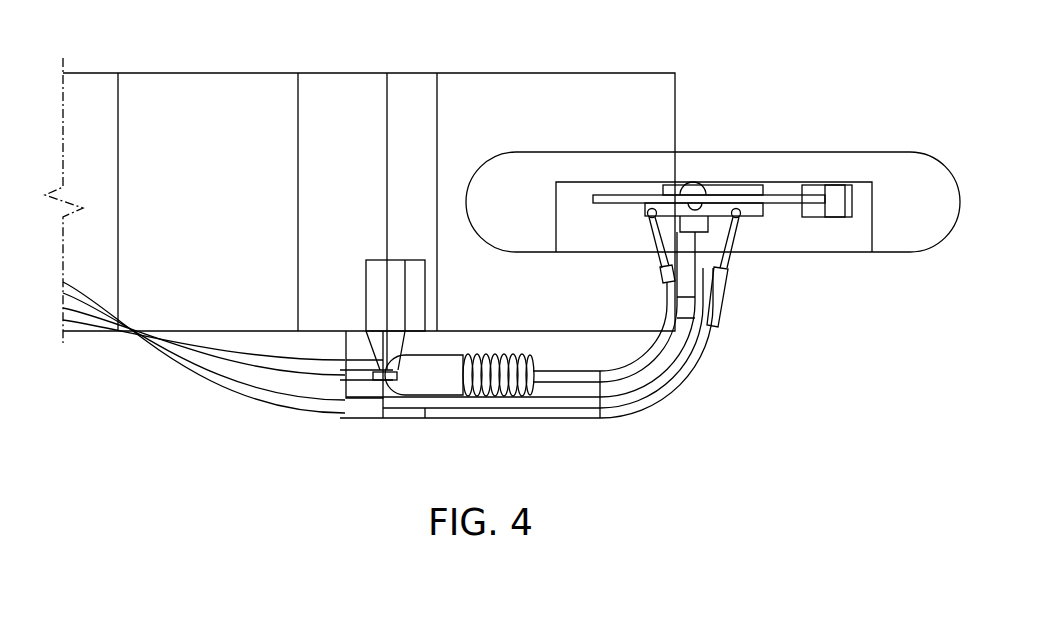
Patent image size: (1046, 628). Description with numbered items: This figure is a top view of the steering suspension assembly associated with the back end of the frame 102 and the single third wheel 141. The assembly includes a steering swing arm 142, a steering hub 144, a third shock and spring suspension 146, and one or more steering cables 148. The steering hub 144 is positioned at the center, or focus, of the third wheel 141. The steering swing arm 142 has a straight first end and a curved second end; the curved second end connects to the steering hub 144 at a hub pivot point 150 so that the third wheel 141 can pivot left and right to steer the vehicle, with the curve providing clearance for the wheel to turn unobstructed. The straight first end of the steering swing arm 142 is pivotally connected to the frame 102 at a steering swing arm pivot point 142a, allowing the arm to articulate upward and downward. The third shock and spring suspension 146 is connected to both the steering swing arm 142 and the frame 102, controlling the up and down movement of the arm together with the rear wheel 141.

The frame 102 is at (246, 84).
The third wheel 141 is at (873, 152).
The steering swing arm 142 is at (633, 383).
The steering swing arm pivot point 142a is at (343, 350).
The steering hub 144 is at (748, 192).
The third shock and spring suspension 146 is at (440, 383).
The steering cables 148 is at (337, 406).
The hub pivot point 150 is at (695, 185).